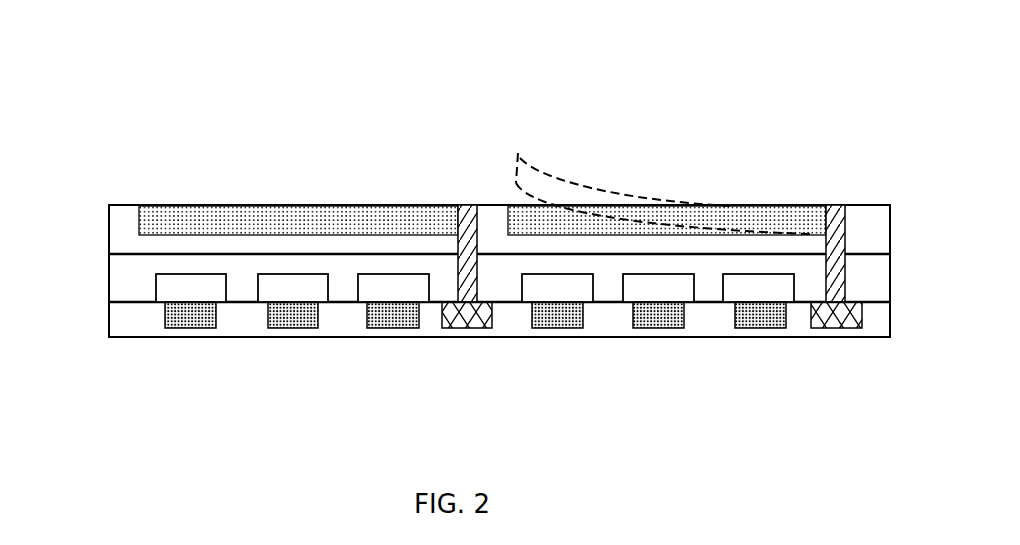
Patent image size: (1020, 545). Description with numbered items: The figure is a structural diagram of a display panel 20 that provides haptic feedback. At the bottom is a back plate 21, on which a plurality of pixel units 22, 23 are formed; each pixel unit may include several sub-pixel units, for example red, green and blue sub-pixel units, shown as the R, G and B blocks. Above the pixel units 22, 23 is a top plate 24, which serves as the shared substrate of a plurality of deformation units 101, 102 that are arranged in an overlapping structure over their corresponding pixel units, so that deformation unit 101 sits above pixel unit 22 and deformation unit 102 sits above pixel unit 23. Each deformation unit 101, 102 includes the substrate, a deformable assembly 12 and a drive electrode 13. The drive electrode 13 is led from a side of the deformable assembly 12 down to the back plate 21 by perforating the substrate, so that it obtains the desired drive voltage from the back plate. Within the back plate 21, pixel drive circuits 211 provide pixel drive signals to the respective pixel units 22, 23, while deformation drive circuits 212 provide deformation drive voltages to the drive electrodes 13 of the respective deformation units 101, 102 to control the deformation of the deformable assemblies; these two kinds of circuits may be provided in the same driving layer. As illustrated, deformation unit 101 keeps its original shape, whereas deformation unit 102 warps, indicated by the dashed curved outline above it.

The display panel 20 is at (499, 127).
The top plate 24 is at (108, 228).
The back plate 21 is at (108, 318).
The deformable assembly 12 is at (477, 187).
The deformation unit 101 is at (323, 205).
The deformation unit 102 is at (692, 203).
The drive electrode 13 is at (468, 215).
The pixel unit 22 is at (108, 277).
The pixel drive circuit 211 is at (382, 328).
The deformation drive circuit 212 is at (473, 325).
The pixel unit 23 is at (799, 282).